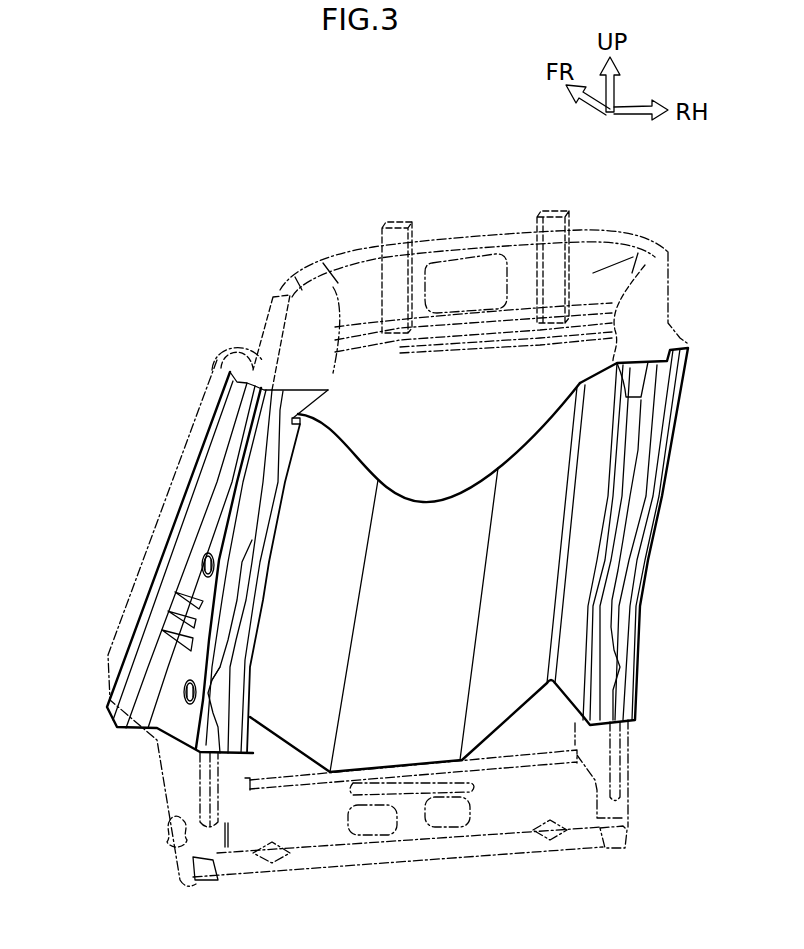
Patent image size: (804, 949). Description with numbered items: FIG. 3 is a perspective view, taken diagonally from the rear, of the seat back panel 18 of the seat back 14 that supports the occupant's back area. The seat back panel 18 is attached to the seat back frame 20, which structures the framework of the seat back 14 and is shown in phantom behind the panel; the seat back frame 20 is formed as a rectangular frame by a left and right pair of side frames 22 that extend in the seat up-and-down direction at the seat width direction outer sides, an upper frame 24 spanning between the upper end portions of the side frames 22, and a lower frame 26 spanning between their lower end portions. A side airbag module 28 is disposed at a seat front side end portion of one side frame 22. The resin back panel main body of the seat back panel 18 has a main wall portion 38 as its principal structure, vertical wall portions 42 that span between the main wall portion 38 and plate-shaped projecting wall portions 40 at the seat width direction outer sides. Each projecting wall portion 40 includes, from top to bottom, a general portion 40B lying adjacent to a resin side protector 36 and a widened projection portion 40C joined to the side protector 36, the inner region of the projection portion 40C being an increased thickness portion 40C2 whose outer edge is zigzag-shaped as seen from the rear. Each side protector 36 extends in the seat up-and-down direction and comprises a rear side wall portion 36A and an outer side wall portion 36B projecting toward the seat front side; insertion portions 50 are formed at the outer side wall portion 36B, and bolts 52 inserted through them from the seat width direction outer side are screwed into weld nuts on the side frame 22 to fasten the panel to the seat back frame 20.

The seat back 14 is at (462, 196).
The seat back panel 18 is at (130, 545).
The seat back frame 20 is at (611, 216).
The side frame 22 is at (290, 357).
The upper frame 24 is at (670, 251).
The lower frame 26 is at (507, 817).
The side airbag module 28 is at (180, 463).
The side protector 36 is at (433, 579).
The rear side wall portion 36A is at (300, 438).
The outer side wall portion 36B is at (230, 402).
The main wall portion 38 is at (417, 558).
The projecting wall portion 40 is at (417, 647).
The general portion 40B is at (263, 513).
The projection portion 40C is at (230, 687).
The increased thickness portion 40C2 is at (223, 703).
The vertical wall portion 42 is at (597, 450).
The insertion portion 50 is at (210, 557).
The bolt 52 is at (205, 562).